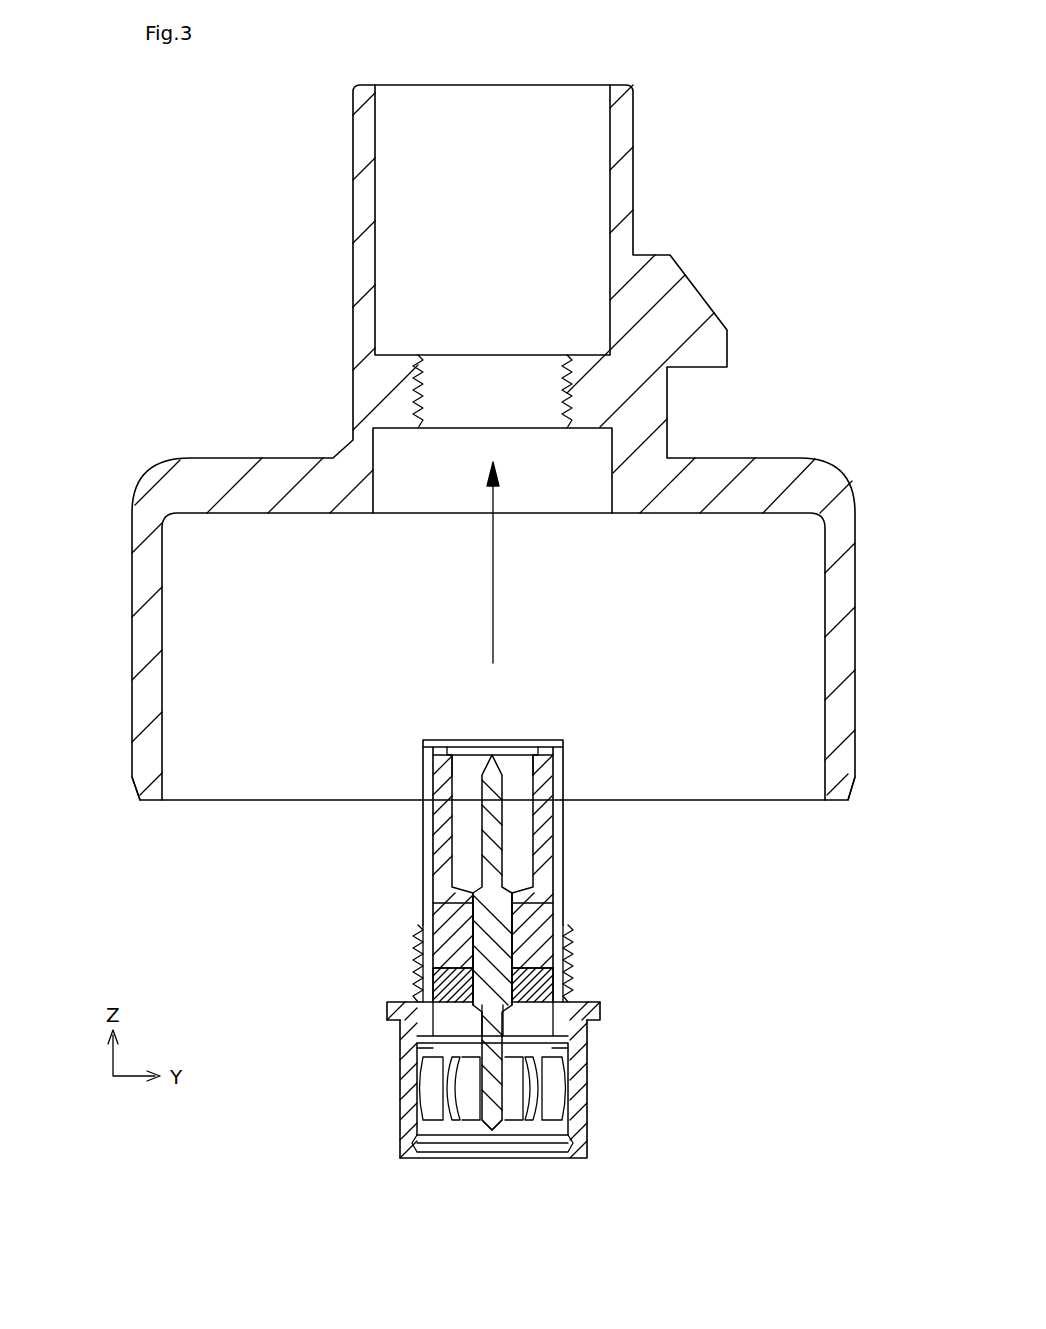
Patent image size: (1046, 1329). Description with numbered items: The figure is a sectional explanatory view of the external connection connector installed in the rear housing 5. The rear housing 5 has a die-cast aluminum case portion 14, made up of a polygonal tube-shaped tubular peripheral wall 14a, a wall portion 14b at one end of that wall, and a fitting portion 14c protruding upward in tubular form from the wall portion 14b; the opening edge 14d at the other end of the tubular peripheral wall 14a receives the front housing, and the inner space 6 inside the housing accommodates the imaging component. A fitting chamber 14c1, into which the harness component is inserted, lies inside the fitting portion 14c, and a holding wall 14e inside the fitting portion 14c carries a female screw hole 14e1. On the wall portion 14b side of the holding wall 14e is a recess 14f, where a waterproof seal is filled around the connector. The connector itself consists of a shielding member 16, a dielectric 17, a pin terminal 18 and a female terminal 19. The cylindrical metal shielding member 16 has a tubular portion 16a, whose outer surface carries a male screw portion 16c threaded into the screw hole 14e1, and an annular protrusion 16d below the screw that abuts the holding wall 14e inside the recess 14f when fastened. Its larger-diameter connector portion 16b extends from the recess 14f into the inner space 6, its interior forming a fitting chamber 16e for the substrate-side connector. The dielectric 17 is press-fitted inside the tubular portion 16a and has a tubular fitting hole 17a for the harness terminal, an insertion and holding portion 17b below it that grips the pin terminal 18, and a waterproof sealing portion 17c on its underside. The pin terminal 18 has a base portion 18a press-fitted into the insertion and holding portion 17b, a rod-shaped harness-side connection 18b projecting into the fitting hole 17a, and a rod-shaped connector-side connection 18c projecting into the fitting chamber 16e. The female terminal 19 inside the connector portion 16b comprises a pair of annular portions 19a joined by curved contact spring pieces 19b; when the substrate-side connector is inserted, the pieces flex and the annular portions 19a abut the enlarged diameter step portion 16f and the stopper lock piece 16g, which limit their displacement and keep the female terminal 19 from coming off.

The rear housing 5 is at (708, 94).
The case portion 14 is at (353, 148).
The fitting portion 14c is at (353, 228).
The fitting chamber 14c1 is at (567, 190).
The holding wall 14e is at (398, 355).
The screw hole 14e1 is at (565, 372).
The wall portion 14b is at (205, 458).
The inner space 6 is at (207, 543).
The tubular peripheral wall 14a is at (132, 622).
The recess 14f is at (373, 490).
The opening edge 14d is at (148, 802).
The shielding member 16 is at (563, 772).
The tubular portion 16a is at (563, 830).
The connector portion 16b is at (405, 1090).
The screw portion 16c is at (575, 942).
The protrusion 16d is at (388, 1012).
The fitting chamber 16e is at (400, 1125).
The enlarged diameter step portion 16f is at (420, 1062).
The stopper lock piece 16g is at (582, 1140).
The dielectric 17 is at (423, 795).
The fitting hole 17a is at (512, 770).
The insertion and holding portion 17b is at (440, 903).
The waterproof sealing portion 17c is at (445, 985).
The pin terminal 18 is at (503, 812).
The base portion 18a is at (503, 937).
The harness-side connection 18b is at (470, 745).
The connector-side connection 18c is at (492, 1131).
The female terminal 19 is at (560, 1080).
The annular portions 19a is at (563, 1050).
The contact spring pieces 19b is at (552, 1105).